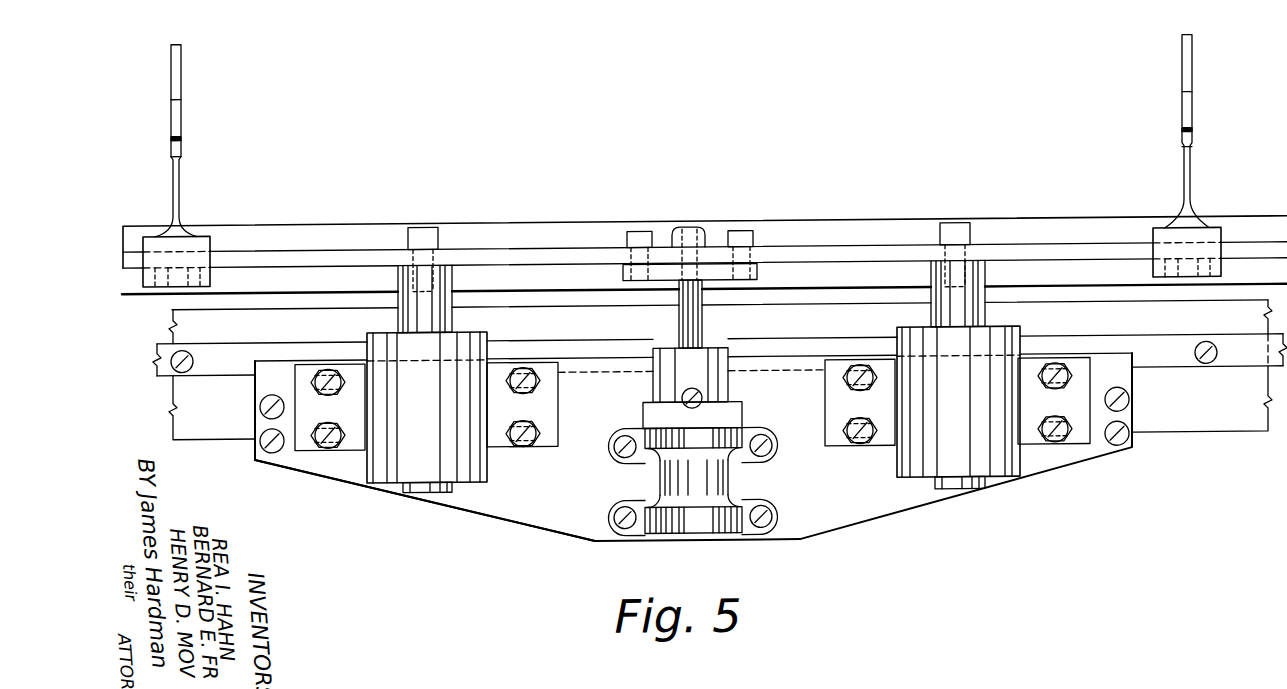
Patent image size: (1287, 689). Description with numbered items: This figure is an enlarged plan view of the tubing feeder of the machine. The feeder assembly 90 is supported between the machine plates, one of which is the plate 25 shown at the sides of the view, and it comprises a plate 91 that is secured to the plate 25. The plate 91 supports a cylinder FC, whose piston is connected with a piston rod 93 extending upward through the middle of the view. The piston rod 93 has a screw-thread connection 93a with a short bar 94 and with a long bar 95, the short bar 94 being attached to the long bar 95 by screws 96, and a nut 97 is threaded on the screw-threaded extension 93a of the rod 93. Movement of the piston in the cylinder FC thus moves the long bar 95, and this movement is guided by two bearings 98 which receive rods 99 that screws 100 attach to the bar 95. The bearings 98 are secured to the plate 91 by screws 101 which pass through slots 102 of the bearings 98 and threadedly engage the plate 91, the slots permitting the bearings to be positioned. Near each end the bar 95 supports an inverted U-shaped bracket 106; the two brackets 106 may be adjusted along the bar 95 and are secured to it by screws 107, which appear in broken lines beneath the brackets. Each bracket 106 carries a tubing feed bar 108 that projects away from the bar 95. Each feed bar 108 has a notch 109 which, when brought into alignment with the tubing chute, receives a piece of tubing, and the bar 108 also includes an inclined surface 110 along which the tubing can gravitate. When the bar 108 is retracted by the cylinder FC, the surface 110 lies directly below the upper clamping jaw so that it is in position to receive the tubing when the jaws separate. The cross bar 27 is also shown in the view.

The plate 25 is at (197, 440).
The cross bar 27 is at (239, 373).
The feeder assembly 90 is at (917, 505).
The plate 91 is at (596, 545).
The piston rod 93 is at (679, 313).
The screw-threaded extension 93a is at (698, 259).
The short bar 94 is at (622, 275).
The long bar 95 is at (564, 246).
The screws 96 is at (645, 232).
The nut 97 is at (687, 228).
The bearings 98 is at (475, 482).
The rods 99 is at (452, 323).
The screws 100 is at (441, 241).
The screws 101 is at (337, 422).
The slots 102 is at (309, 374).
The inverted U-shaped brackets 106 is at (211, 248).
The screws 107 is at (190, 283).
The tubing feed bar 108 is at (181, 134).
The notch 109 is at (173, 148).
The inclined surface 110 is at (182, 66).
The cylinder FC is at (742, 535).